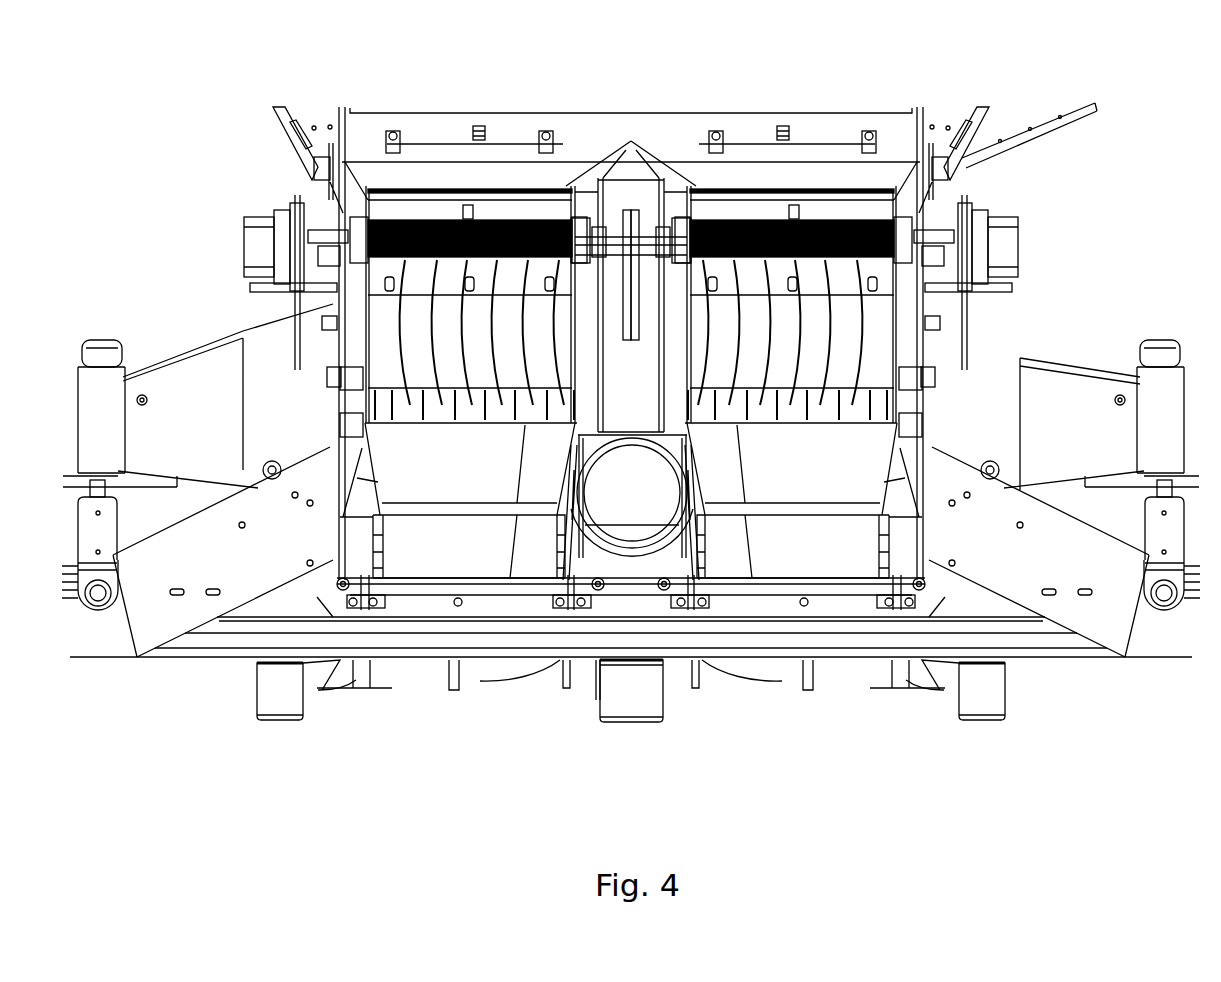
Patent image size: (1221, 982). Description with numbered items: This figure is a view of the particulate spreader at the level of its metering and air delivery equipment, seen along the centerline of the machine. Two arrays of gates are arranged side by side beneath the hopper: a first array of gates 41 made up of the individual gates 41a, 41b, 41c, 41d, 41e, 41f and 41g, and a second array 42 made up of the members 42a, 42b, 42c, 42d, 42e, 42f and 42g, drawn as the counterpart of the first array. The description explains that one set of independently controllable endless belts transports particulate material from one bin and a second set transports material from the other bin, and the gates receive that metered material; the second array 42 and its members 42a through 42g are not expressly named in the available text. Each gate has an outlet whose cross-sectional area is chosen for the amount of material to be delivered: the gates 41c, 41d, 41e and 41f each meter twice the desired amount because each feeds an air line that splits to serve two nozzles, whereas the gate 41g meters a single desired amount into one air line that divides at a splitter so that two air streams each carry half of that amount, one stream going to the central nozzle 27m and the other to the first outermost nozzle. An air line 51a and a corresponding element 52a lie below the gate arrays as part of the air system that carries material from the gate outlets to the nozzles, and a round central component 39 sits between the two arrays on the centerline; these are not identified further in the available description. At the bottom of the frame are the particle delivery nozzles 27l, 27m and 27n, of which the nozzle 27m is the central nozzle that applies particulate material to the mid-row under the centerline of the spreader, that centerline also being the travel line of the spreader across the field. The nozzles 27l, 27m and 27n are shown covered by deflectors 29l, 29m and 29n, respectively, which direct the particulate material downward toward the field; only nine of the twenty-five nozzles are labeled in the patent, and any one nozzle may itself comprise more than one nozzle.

The particle delivery nozzle 27l is at (950, 697).
The central nozzle 27m is at (597, 692).
The particle delivery nozzle 27n is at (313, 703).
The deflector 29l is at (982, 700).
The deflector 29m is at (637, 693).
The deflector 29n is at (282, 700).
The discharge tube 39 is at (622, 503).
The gate 41 is at (815, 550).
The gate 41a is at (710, 217).
The gate 41b is at (735, 213).
The gate 41c is at (752, 217).
The gate 41d is at (807, 160).
The gate 41e is at (830, 217).
The gate 41f is at (873, 168).
The gate 41g is at (889, 210).
The second rotor 42 is at (445, 553).
The second rotor flail row a 42a is at (570, 200).
The second rotor flail row b 42b is at (551, 168).
The second rotor flail row c 42c is at (500, 218).
The second rotor flail row d 42d is at (487, 166).
The second rotor flail row e 42e is at (435, 218).
The second rotor flail row f 42f is at (410, 215).
The second rotor flail row g 42g is at (388, 215).
The air line 51a is at (758, 670).
The second rotor shroud 52a is at (523, 668).